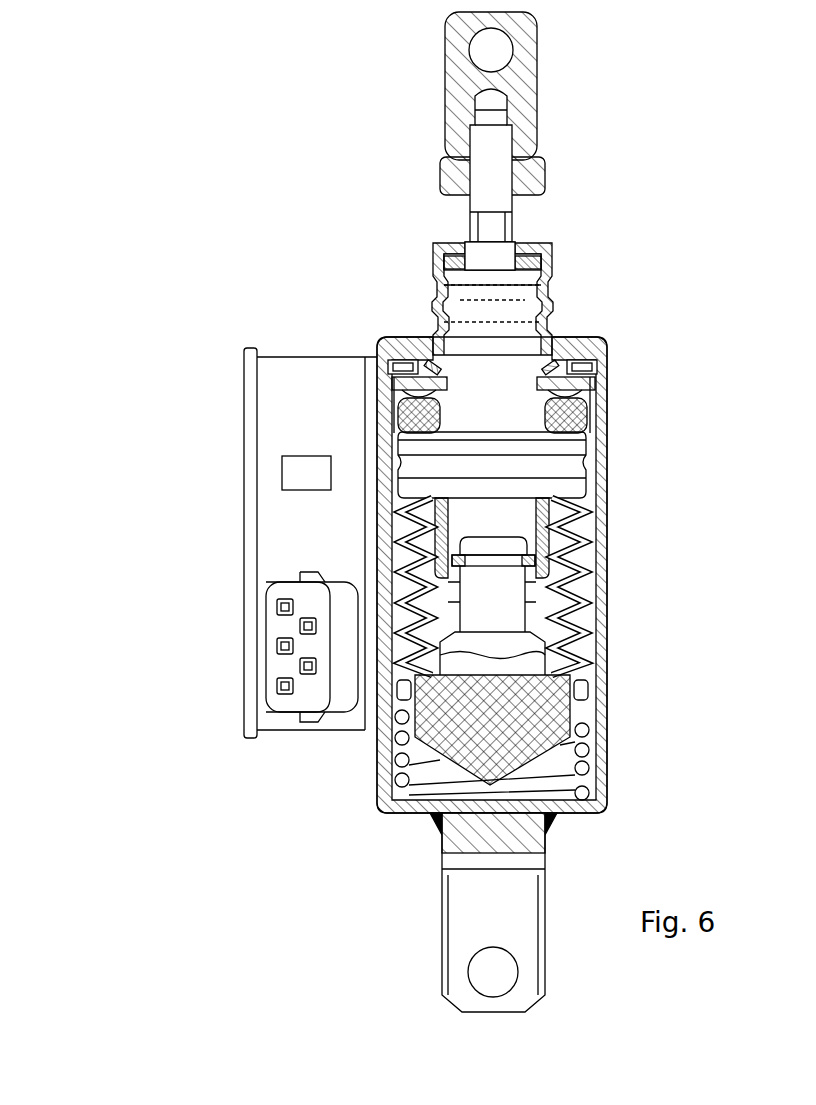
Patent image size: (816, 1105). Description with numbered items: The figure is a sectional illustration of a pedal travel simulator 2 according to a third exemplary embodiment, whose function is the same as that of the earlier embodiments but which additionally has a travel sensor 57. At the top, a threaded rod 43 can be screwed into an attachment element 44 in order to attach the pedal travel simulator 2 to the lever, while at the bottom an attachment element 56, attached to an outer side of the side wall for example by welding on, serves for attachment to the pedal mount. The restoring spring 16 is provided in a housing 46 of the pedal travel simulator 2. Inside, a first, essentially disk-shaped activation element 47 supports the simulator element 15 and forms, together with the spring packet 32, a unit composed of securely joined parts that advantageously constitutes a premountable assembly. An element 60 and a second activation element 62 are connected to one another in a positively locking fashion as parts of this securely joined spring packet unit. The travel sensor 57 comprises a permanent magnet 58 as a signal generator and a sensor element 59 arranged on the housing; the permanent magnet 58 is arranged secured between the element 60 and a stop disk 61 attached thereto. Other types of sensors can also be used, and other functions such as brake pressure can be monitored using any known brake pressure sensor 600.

The pedal travel simulator 2 is at (373, 158).
The attachment element 44 is at (514, 75).
The threaded rod 43 is at (497, 176).
The element 60 is at (460, 332).
The stop disk 61 is at (610, 378).
The permanent magnet 58 is at (600, 414).
The second activation element 62 is at (600, 500).
The housing 46 is at (605, 548).
The spring packet 32 is at (595, 585).
The first activation element 47 is at (600, 672).
The simulator element 15 is at (600, 690).
The restoring spring 16 is at (595, 750).
The attachment element 56 is at (445, 866).
The travel sensor 57 is at (231, 404).
The sensor element 59 is at (258, 528).
The brake pressure sensor 600 is at (283, 470).